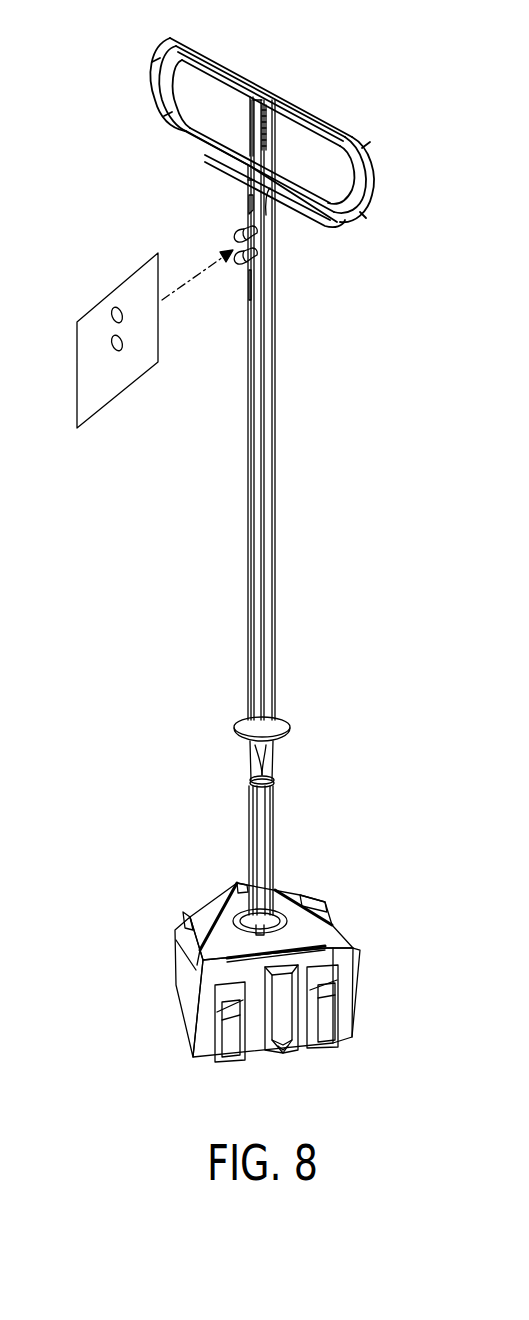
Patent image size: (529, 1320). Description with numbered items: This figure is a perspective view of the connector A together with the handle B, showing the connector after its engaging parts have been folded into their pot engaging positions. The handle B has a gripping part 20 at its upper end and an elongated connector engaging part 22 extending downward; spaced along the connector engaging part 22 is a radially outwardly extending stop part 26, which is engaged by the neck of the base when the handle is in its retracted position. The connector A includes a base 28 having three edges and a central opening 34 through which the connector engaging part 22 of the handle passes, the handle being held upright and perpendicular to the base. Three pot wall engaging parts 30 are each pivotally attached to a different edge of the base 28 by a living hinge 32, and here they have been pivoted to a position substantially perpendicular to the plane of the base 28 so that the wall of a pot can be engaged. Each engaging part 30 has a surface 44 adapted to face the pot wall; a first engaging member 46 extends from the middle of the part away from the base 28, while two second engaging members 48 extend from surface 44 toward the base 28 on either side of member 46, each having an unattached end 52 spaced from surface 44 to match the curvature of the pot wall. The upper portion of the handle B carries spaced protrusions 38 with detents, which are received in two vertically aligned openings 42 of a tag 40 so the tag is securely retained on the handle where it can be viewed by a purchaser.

The gripping part 20 is at (297, 108).
The connector engaging part 22 is at (272, 612).
The stop part 26 is at (292, 733).
The base 28 is at (223, 890).
The pot wall engaging part 30 is at (207, 1038).
The living hinge 32 is at (276, 912).
The central opening 34 is at (183, 928).
The protrusions 38 is at (258, 240).
The tag 40 is at (113, 375).
The openings 42 is at (112, 313).
The surface 44 is at (258, 1047).
The first engaging member 46 is at (287, 1048).
The second engaging members 48 is at (230, 1060).
The unattached end 52 is at (212, 1008).
The connector A is at (360, 939).
The handle B is at (302, 447).